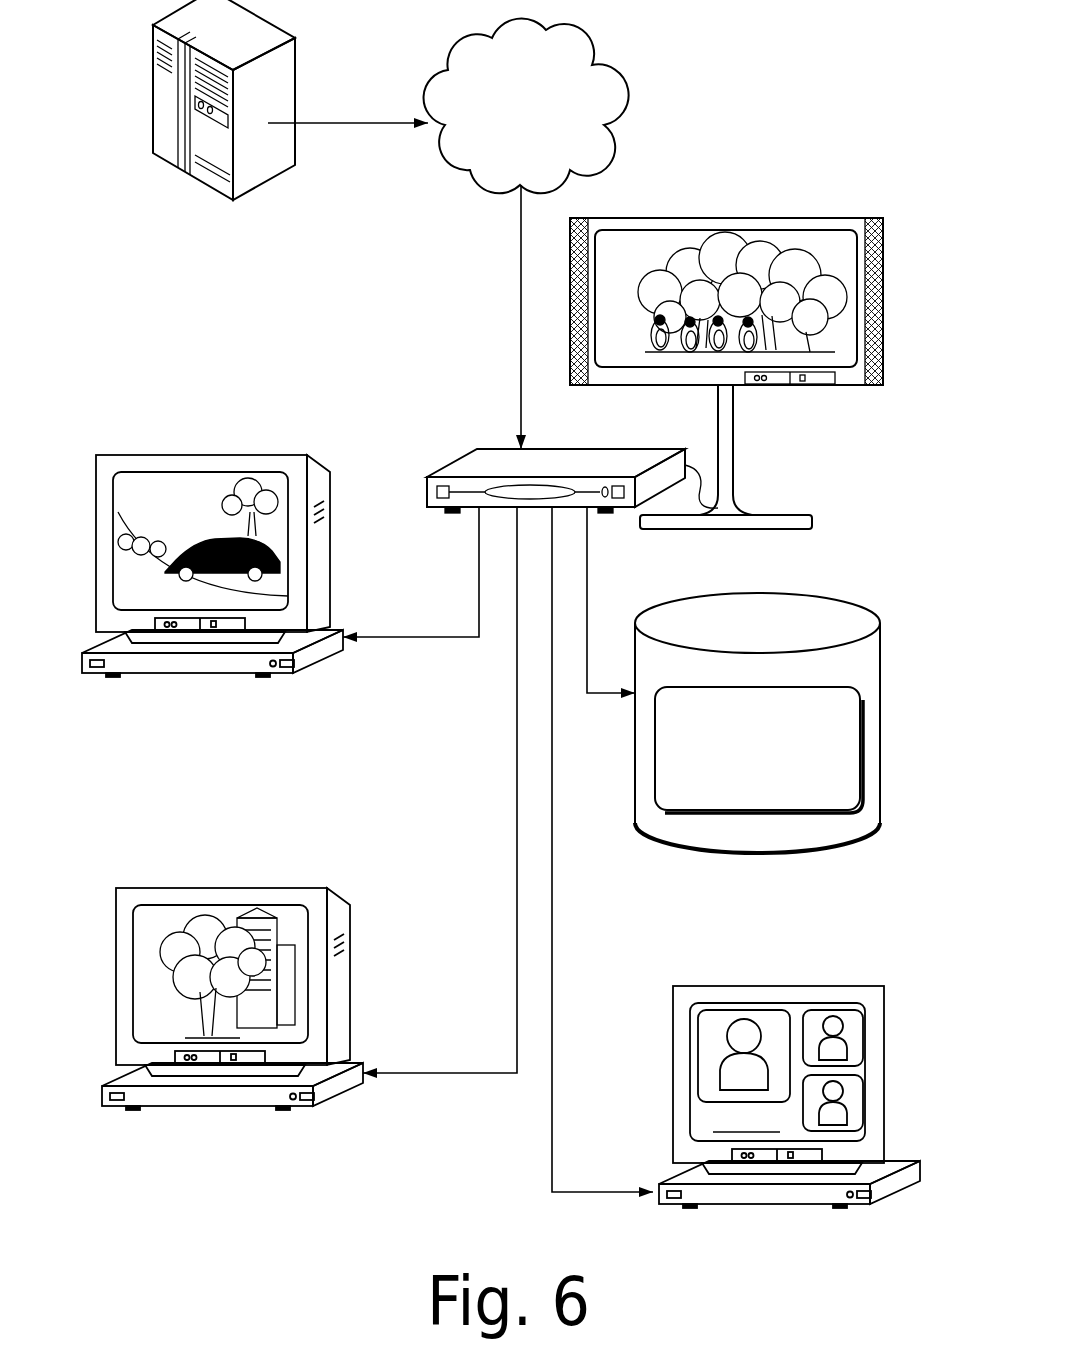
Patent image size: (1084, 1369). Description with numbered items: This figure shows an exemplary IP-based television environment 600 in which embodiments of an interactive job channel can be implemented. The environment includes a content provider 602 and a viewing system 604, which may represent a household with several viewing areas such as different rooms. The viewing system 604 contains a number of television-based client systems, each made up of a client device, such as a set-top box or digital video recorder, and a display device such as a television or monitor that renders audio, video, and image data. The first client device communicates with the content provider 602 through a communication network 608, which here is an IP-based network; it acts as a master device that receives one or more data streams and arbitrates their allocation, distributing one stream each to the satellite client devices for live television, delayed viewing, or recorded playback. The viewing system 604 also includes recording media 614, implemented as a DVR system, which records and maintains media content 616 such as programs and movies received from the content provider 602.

The IP-based television environment 600 is at (712, 72).
The content provider 602 is at (323, 237).
The viewing system 604 is at (466, 337).
The communication network 608 is at (612, 75).
The recording media 614 is at (757, 723).
The media content 616 is at (780, 793).